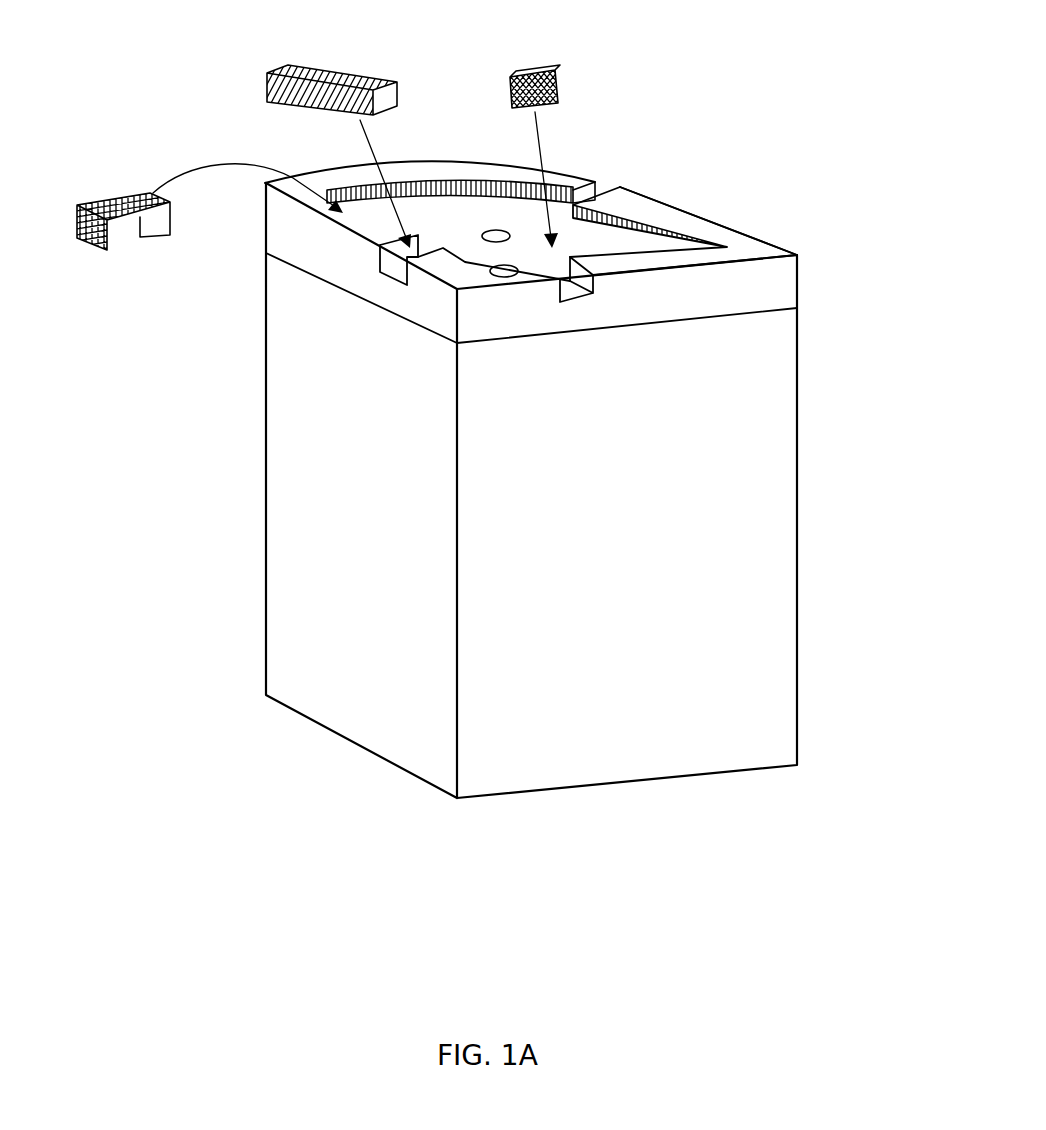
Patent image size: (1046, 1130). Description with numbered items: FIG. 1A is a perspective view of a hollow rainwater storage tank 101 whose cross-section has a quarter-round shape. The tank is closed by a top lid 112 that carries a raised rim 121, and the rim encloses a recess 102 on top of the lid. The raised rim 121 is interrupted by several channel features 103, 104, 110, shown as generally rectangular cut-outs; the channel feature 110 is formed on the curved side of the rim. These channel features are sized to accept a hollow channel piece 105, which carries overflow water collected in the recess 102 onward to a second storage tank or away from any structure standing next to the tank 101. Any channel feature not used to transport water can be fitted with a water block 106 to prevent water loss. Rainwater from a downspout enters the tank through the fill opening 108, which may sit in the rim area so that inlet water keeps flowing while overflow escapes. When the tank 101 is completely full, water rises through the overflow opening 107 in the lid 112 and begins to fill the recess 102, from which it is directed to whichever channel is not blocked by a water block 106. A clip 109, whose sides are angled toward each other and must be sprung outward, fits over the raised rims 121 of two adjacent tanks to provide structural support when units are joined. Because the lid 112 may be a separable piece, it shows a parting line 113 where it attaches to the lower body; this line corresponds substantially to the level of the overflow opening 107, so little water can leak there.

The storage tank 101 is at (812, 462).
The recess 102 is at (600, 238).
The channel feature 103 is at (580, 288).
The channel feature 104 is at (410, 258).
The channel piece 105 is at (347, 70).
The water block 106 is at (562, 83).
The overflow opening 107 is at (495, 232).
The fill opening 108 is at (450, 293).
The clip 109 is at (118, 193).
The channel feature 110 is at (602, 182).
The top lid 112 is at (726, 214).
The parting line 113 is at (780, 313).
The raised rim 121 is at (770, 252).